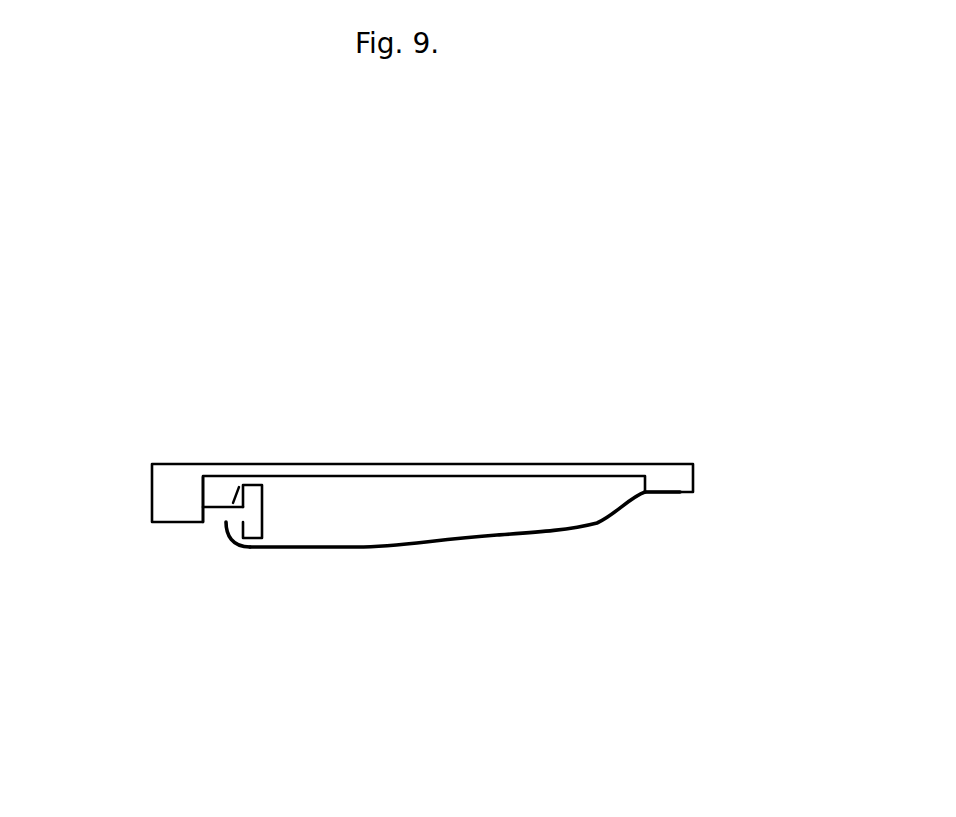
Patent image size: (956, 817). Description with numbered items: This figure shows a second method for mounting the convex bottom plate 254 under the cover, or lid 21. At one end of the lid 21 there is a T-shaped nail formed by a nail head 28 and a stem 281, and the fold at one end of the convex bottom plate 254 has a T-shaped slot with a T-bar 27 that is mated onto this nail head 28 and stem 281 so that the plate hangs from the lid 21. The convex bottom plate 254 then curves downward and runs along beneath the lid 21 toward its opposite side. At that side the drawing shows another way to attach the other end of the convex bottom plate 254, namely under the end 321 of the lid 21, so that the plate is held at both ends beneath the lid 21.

The lid 21 is at (549, 464).
The stem 281 is at (217, 512).
The nail head 28 is at (263, 500).
The T-bar 27 is at (233, 543).
The convex bottom plate 254 is at (453, 540).
The end of the lid 321 is at (677, 482).